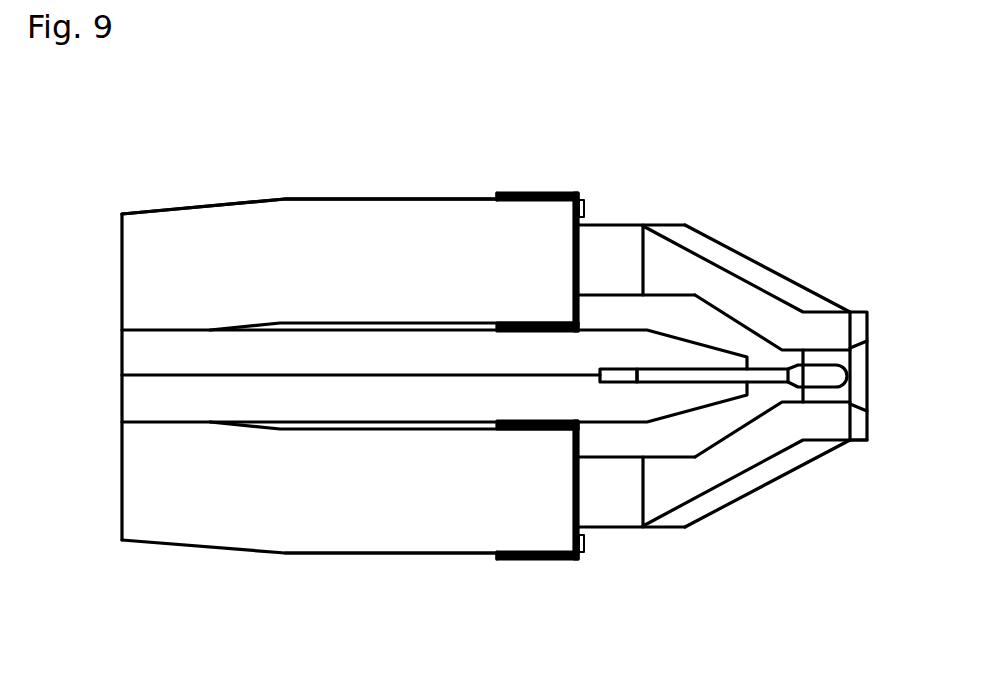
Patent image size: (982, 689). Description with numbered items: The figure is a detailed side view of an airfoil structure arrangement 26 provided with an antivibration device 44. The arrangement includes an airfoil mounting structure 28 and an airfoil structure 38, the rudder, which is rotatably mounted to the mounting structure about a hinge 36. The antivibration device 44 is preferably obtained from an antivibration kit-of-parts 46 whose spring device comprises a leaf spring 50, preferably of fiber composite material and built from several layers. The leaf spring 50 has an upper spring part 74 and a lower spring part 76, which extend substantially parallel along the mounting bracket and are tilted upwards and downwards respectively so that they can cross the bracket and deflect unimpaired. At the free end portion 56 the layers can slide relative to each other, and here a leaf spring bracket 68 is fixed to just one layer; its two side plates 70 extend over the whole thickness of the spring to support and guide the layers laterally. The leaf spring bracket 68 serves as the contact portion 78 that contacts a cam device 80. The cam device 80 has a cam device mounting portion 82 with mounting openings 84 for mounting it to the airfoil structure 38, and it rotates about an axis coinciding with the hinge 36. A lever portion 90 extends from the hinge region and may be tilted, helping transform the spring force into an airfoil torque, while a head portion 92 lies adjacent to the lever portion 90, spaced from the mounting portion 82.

The airfoil structure arrangement 26 is at (157, 168).
The airfoil mounting structure 28 is at (122, 372).
The hinge 36 is at (757, 409).
The airfoil structure 38 is at (828, 350).
The antivibration device 44 is at (332, 145).
The antivibration kit-of-parts 46 is at (213, 212).
The leaf spring 50 is at (268, 212).
The free end portion 56 is at (529, 168).
The leaf spring bracket 68 is at (583, 210).
The side plates 70 is at (552, 192).
The upper spring part 74 is at (383, 213).
The lower spring part 76 is at (358, 543).
The contact portion 78 is at (590, 219).
The cam device 80 is at (708, 203).
The cam device mounting portion 82 is at (876, 318).
The mounting openings 84 is at (853, 455).
The lever portion 90 is at (776, 290).
The head portion 92 is at (635, 232).